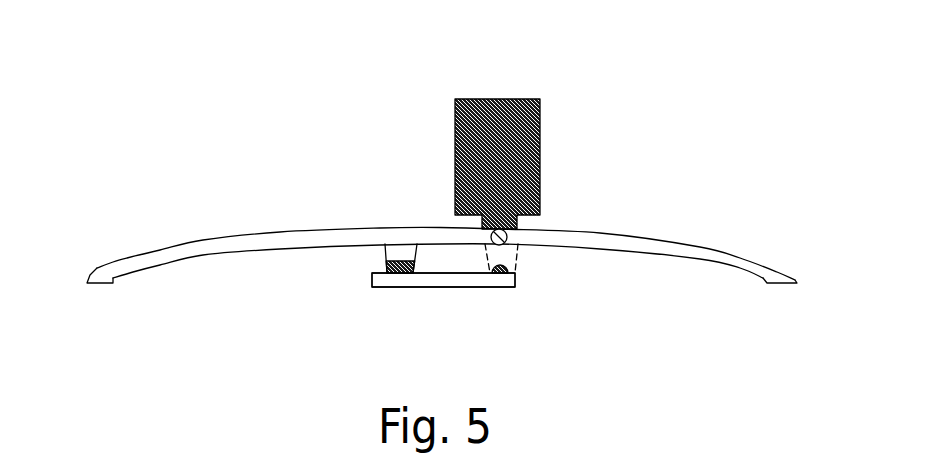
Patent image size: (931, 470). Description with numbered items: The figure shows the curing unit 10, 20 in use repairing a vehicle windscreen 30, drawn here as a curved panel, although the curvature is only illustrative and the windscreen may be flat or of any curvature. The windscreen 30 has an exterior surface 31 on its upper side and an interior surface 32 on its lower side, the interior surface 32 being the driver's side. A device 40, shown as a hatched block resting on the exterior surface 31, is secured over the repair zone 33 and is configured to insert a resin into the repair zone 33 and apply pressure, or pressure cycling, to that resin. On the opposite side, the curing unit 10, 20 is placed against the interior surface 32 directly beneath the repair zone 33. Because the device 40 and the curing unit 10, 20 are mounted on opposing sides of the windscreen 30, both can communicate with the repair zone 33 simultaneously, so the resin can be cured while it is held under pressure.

The curing unit 10 is at (443, 317).
The curing unit 20 is at (442, 333).
The windscreen 30 is at (110, 273).
The exterior surface 31 is at (203, 240).
The interior surface 32 is at (715, 265).
The repair zone 33 is at (507, 233).
The device 40 is at (473, 99).